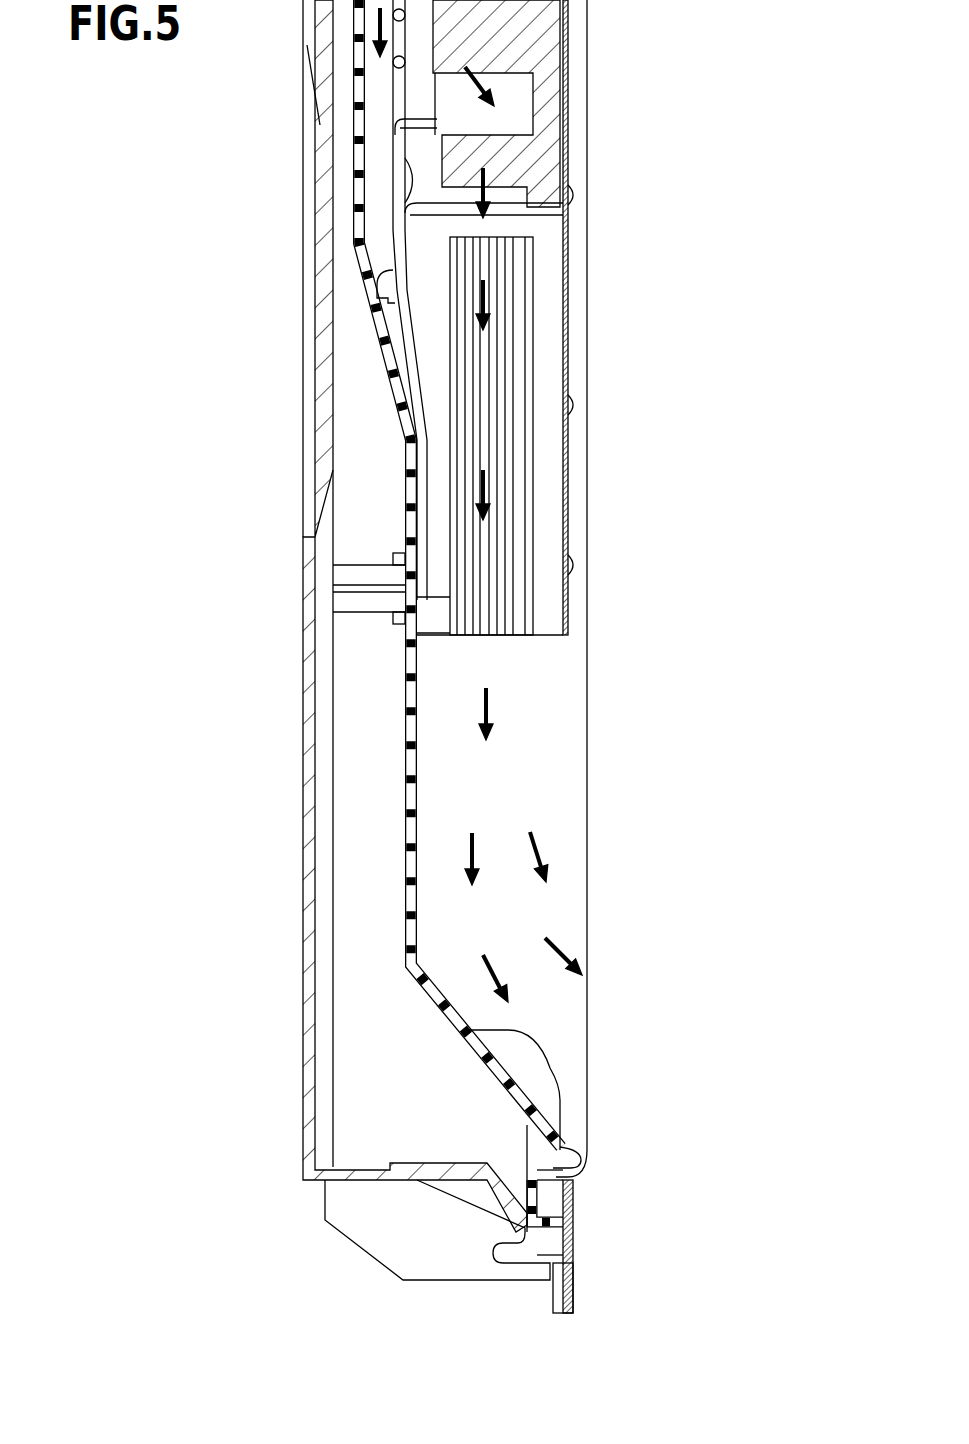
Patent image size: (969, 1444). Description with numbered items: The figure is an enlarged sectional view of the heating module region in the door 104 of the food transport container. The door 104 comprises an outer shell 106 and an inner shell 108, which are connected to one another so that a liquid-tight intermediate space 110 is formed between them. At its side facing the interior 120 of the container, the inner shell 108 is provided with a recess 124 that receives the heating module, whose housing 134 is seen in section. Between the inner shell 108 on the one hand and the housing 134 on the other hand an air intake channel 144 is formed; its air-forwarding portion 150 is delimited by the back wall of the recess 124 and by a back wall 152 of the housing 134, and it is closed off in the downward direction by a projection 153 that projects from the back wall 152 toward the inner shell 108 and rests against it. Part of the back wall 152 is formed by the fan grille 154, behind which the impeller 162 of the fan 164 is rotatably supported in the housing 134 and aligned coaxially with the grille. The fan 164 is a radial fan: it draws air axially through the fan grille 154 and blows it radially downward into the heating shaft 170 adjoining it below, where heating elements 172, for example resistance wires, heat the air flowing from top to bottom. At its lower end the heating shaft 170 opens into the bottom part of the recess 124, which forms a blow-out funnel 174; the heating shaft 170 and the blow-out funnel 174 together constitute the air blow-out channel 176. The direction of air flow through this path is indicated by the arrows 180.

The door 104 is at (388, 640).
The outer shell 106 is at (376, 616).
The inner shell 108 is at (403, 611).
The intermediate space 110 is at (315, 818).
The interior 120 is at (566, 362).
The recess 124 is at (561, 1152).
The housing 134 is at (338, 366).
The air intake channel 144 is at (394, 178).
The air-forwarding portion 150 is at (331, 117).
The back wall 152 is at (394, 354).
The projection 153 is at (310, 284).
The fan grille 154 is at (315, 50).
The impeller 162 is at (543, 103).
The fan 164 is at (565, 157).
The heating shaft 170 is at (552, 436).
The heating elements 172 is at (555, 436).
The blow-out funnel 174 is at (559, 938).
The air blow-out channel 176 is at (601, 350).
The arrows 180 is at (566, 703).